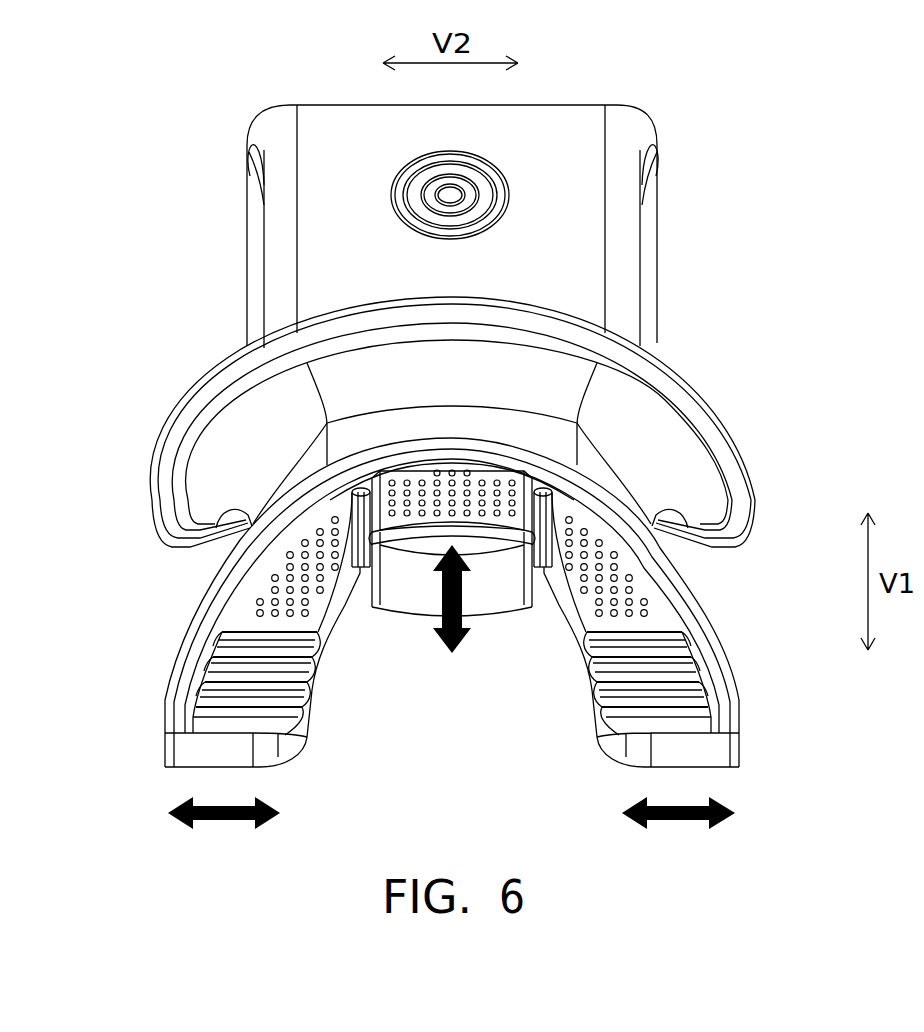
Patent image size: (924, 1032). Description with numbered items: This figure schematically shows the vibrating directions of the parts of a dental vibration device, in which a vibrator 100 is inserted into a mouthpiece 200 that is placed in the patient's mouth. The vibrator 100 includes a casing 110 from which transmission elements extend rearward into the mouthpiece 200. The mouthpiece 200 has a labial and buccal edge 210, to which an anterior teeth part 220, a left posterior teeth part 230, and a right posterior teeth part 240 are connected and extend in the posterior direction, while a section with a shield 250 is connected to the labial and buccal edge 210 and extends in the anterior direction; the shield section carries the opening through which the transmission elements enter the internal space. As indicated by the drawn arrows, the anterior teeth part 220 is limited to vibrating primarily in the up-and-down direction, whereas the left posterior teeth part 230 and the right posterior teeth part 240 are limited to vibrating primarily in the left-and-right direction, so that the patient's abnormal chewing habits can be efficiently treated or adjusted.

The vibrator 100 is at (262, 265).
The casing 110 is at (622, 265).
The mouthpiece 200 is at (190, 628).
The labial and buccal edge 210 is at (227, 595).
The anterior teeth part 220 is at (412, 588).
The left posterior teeth part 230 is at (677, 723).
The right posterior teeth part 240 is at (227, 723).
The section with a shield 250 is at (210, 484).